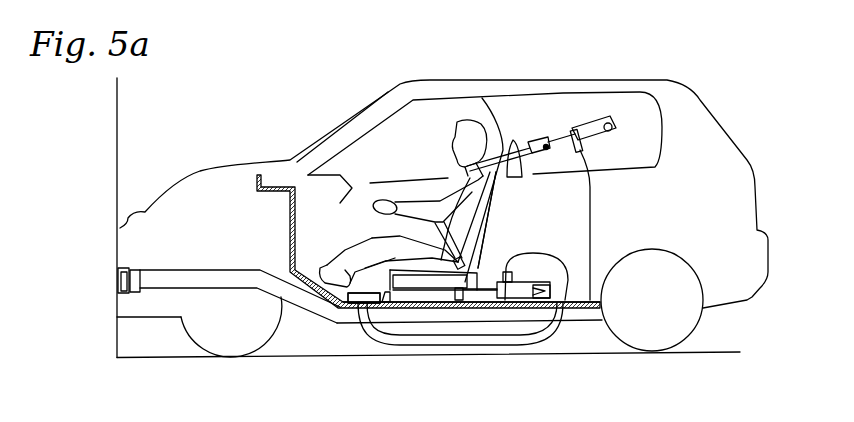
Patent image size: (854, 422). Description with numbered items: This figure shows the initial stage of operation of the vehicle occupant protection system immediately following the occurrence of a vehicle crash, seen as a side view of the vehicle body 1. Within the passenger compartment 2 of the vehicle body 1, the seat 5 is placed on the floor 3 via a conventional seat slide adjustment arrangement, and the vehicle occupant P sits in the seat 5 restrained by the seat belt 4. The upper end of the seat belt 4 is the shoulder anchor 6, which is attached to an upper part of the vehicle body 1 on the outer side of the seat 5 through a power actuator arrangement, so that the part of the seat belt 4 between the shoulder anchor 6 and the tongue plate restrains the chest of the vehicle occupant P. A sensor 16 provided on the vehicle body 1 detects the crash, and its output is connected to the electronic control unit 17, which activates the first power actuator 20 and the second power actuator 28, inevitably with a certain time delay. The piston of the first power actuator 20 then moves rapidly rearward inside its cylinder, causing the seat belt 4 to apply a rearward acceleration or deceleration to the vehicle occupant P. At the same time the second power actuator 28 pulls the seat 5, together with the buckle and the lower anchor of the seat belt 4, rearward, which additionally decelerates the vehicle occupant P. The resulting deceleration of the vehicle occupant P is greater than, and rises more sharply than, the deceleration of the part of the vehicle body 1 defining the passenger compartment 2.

The vehicle body 1 is at (755, 193).
The passenger compartment 2 is at (412, 154).
The floor 3 is at (442, 308).
The seat belt 4 is at (482, 98).
The seat 5 is at (497, 212).
The shoulder anchor 6 is at (537, 142).
The sensor 16 is at (363, 303).
The electronic control unit 17 is at (364, 298).
The first power actuator 20 is at (615, 112).
The second power actuator 28 is at (543, 270).
The vehicle occupant P is at (465, 122).